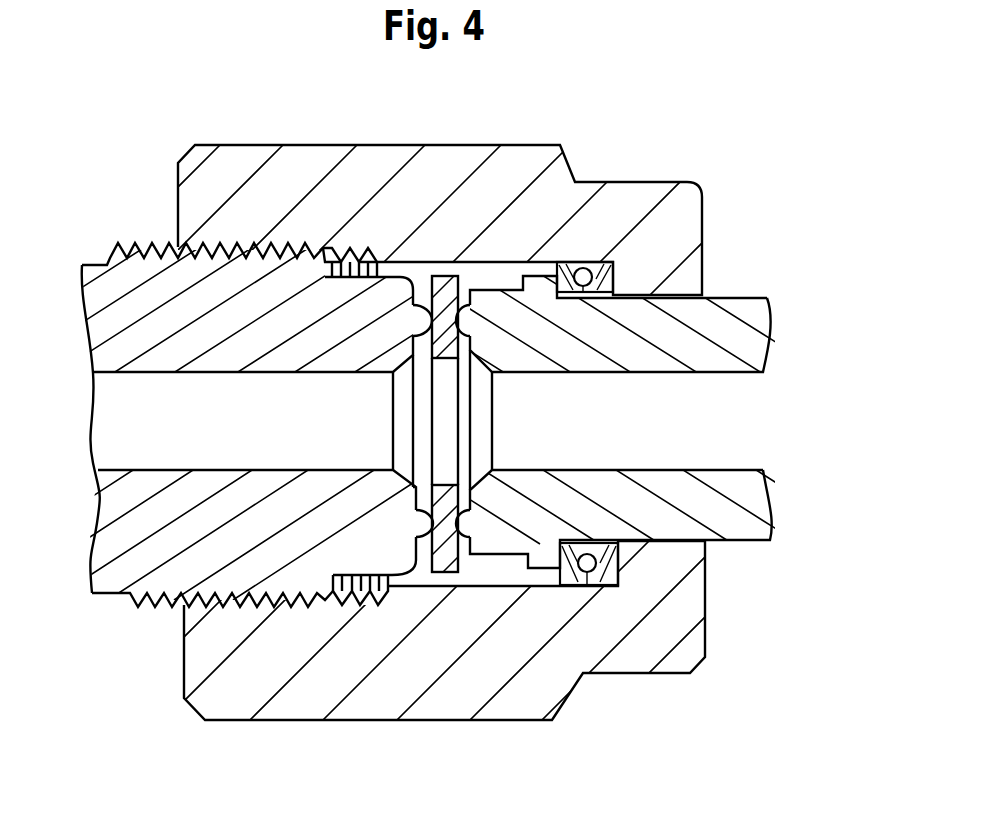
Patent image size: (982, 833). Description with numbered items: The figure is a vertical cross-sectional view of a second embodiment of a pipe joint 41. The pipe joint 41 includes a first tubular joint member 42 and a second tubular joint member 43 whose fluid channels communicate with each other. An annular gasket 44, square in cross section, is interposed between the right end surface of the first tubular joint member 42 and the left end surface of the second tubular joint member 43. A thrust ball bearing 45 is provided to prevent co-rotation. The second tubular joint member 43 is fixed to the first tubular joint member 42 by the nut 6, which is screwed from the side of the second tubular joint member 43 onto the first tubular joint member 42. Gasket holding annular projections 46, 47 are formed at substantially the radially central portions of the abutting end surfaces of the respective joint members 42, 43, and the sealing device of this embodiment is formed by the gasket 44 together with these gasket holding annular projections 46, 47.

The nut 6 is at (266, 706).
The pipe joint 41 is at (733, 204).
The first tubular joint member 42 is at (121, 565).
The second tubular joint member 43 is at (738, 522).
The annular gasket 44 is at (442, 285).
The thrust ball bearing 45 is at (608, 585).
The gasket holding annular projection 46 is at (423, 540).
The gasket holding annular projection 47 is at (468, 530).